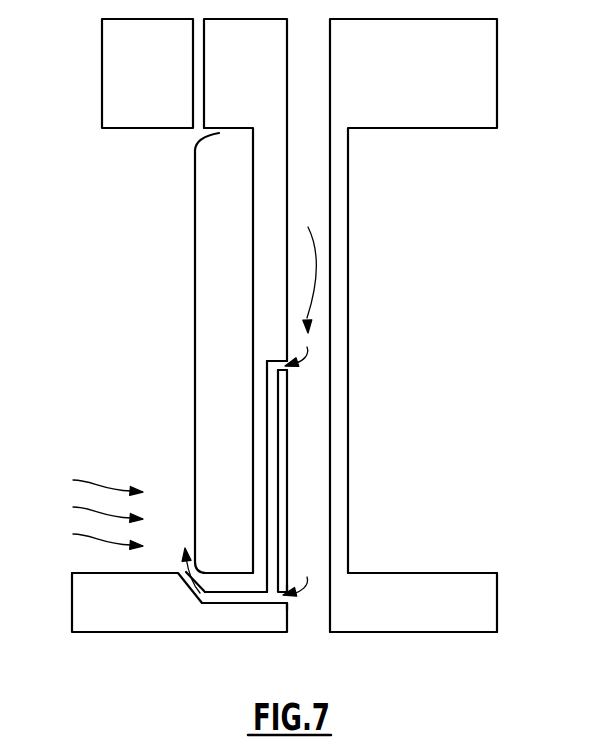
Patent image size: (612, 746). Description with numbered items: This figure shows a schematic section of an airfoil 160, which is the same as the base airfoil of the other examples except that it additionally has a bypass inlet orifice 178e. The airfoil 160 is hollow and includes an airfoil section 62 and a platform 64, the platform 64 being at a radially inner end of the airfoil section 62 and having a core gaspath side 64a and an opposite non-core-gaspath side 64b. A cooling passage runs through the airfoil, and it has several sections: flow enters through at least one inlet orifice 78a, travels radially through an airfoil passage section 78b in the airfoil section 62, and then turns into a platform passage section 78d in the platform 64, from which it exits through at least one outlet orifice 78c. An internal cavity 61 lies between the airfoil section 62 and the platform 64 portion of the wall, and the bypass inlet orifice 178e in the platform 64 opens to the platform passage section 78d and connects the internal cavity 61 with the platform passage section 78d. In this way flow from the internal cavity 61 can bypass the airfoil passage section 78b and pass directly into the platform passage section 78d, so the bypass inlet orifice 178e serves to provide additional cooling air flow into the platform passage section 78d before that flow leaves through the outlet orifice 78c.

The airfoil 160 is at (106, 339).
The airfoil section 62 is at (195, 352).
The internal cavity 61 is at (288, 204).
The inlet orifice 78a is at (290, 371).
The airfoil passage section 78b is at (273, 474).
The outlet orifice 78c is at (182, 567).
The platform passage section 78d is at (229, 597).
The bypass inlet orifice 178e is at (287, 602).
The platform 64 is at (485, 603).
The core gaspath side 64a is at (443, 573).
The non-core-gaspath side 64b is at (455, 632).